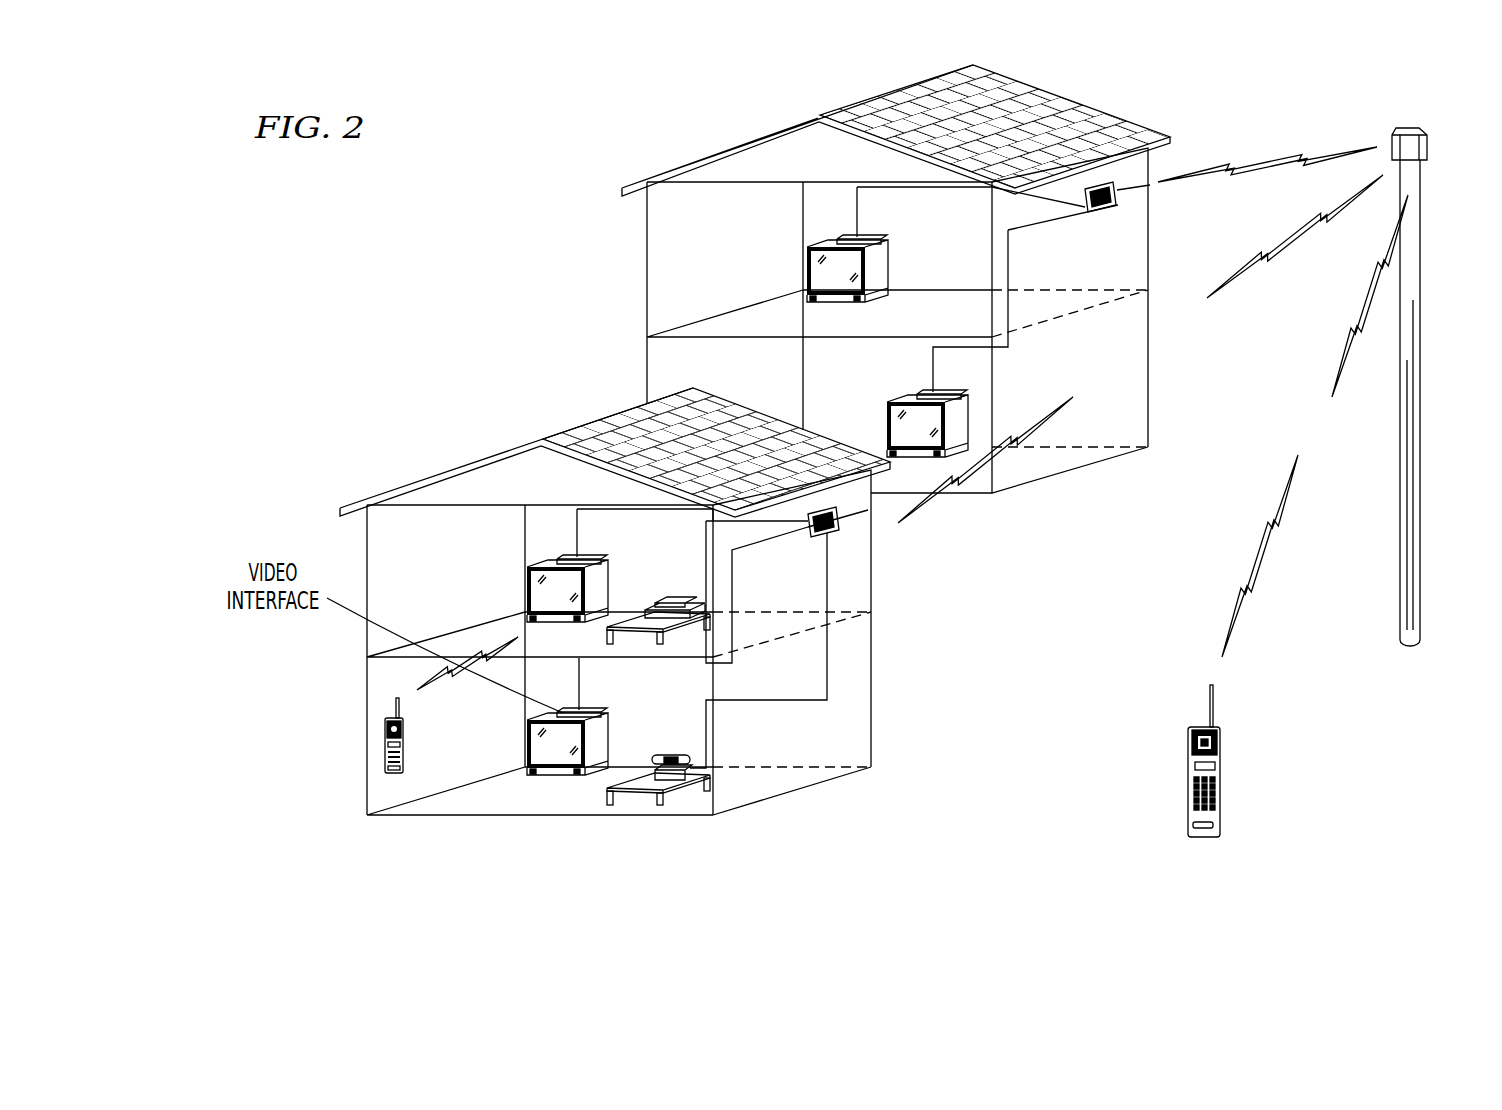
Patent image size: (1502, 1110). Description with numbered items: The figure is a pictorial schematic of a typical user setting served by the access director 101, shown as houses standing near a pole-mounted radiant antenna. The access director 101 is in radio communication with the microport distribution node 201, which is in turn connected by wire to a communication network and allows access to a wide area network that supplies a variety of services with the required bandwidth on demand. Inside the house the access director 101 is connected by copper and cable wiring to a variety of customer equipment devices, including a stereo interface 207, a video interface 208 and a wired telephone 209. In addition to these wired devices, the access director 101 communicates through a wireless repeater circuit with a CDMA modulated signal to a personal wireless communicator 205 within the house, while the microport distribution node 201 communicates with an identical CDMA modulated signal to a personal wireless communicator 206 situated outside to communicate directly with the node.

The access director 101 is at (837, 530).
The microport distribution node 201 is at (1393, 132).
The personal wireless communicator 205 is at (385, 725).
The personal wireless communicator 206 is at (1186, 743).
The stereo interface 207 is at (667, 597).
The video interface 208 is at (563, 560).
The wired telephone 209 is at (643, 787).